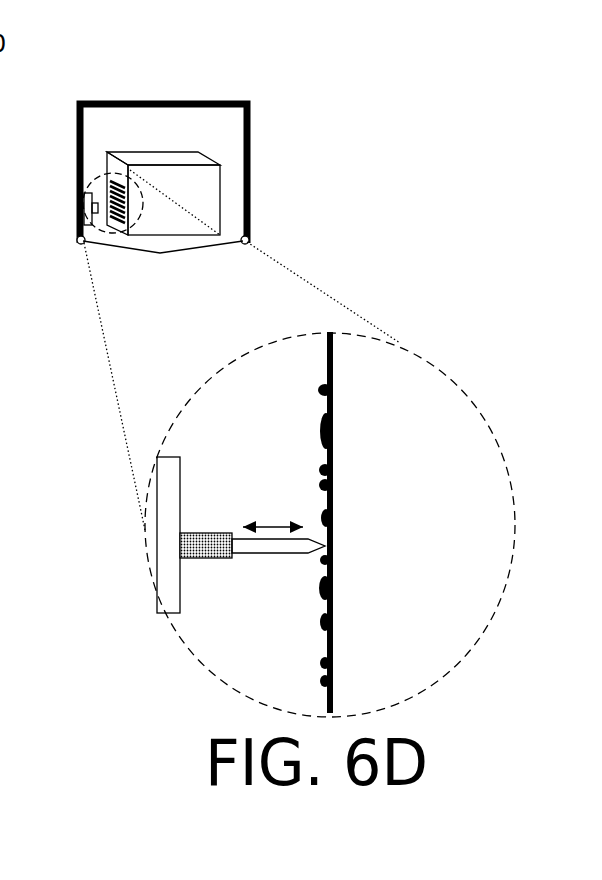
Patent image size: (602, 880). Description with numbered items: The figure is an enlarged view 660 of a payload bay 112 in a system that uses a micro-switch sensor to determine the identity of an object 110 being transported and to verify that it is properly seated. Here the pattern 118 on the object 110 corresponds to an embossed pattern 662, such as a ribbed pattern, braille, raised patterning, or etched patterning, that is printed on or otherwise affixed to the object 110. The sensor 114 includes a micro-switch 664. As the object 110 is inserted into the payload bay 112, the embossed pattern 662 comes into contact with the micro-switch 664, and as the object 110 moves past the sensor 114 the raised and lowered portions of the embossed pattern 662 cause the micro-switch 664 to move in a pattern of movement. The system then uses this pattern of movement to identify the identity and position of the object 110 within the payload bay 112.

The enlarged view 660 is at (508, 68).
The payload bay 112 is at (257, 145).
The object 110 is at (377, 340).
The pattern 118 is at (345, 415).
The embossed pattern 662 is at (315, 465).
The micro-switch 664 is at (280, 558).
The sensor 114 is at (162, 627).